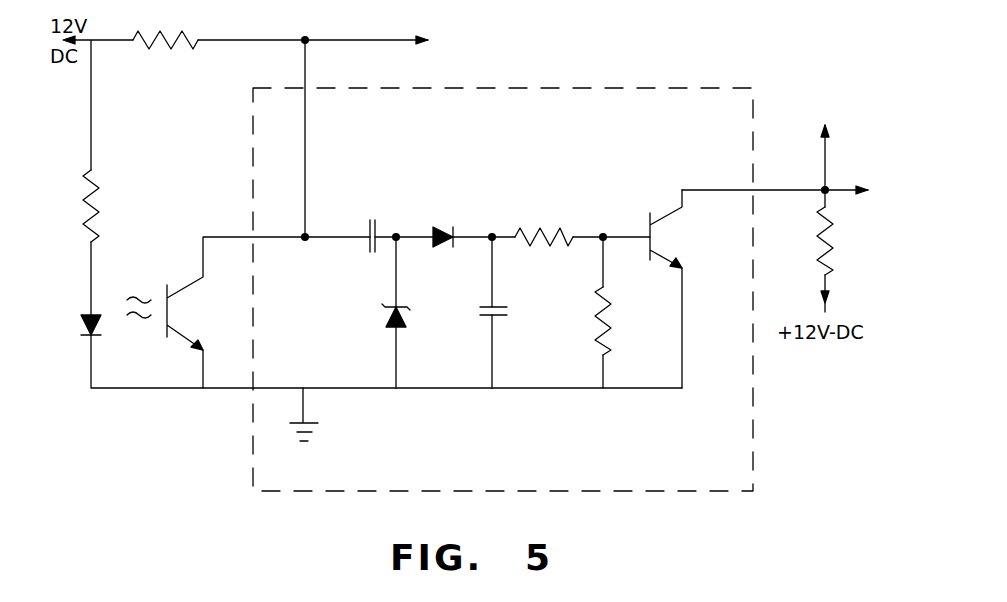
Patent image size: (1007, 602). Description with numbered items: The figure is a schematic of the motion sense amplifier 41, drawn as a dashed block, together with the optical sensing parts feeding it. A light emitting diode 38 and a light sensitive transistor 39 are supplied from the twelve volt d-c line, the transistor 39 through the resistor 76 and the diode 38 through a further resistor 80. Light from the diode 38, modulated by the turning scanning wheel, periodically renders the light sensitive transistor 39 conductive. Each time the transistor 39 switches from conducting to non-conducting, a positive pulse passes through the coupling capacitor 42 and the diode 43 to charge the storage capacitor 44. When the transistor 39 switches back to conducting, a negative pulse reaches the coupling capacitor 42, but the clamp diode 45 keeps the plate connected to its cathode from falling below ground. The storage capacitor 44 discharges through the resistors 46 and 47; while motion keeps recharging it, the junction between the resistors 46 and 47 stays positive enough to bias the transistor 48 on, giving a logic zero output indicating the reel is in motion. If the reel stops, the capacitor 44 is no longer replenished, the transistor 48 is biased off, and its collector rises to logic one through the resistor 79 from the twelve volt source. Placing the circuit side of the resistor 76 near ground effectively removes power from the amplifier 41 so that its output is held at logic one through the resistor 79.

The light emitting diode 38 is at (100, 325).
The light sensitive transistor 39 is at (188, 283).
The motion sense amplifier 41 is at (630, 491).
The coupling capacitor 42 is at (365, 225).
The diode 43 is at (445, 225).
The storage capacitor 44 is at (505, 318).
The clamp diode 45 is at (408, 316).
The resistor 46 is at (531, 229).
The resistor 47 is at (611, 320).
The transistor 48 is at (669, 215).
The resistor 76 is at (180, 35).
The resistor 79 is at (834, 251).
The resistor 80 is at (99, 225).